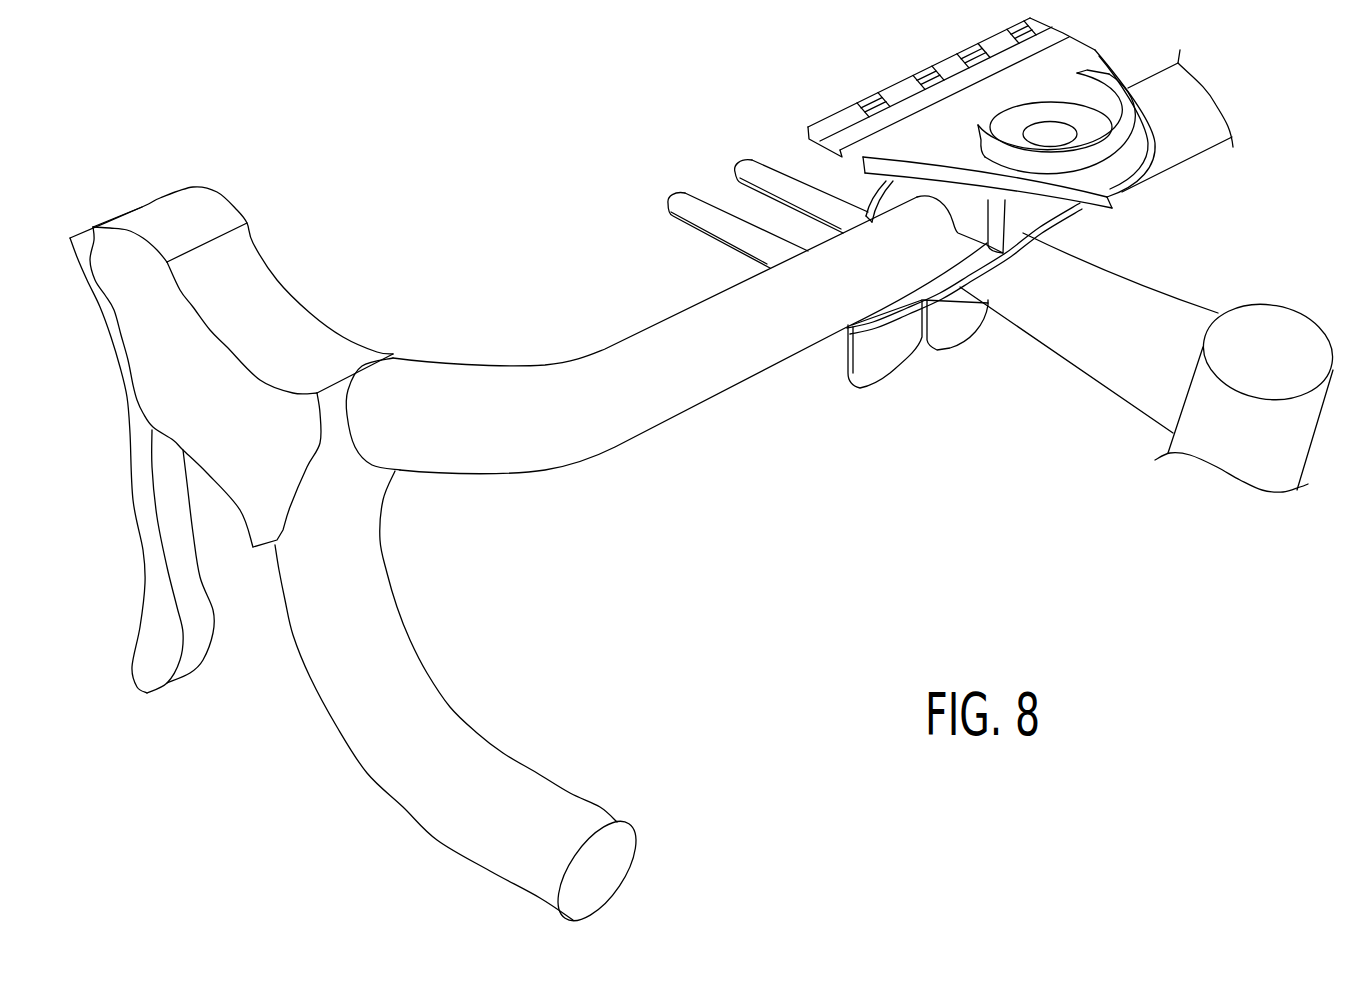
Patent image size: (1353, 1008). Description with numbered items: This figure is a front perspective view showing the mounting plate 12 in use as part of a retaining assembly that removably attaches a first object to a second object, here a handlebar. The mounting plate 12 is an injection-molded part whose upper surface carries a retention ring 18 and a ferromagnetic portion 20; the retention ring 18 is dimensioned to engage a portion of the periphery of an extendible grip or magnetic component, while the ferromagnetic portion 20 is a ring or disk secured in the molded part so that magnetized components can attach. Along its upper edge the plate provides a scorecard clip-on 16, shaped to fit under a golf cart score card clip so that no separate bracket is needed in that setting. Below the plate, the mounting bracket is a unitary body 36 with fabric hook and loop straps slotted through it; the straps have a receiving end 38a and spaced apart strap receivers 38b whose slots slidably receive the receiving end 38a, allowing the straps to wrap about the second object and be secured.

The mounting plate 12 is at (1064, 56).
The scorecard clip-on 16 is at (893, 96).
The retention ring 18 is at (1108, 150).
The ferromagnetic portion 20 is at (1017, 122).
The body 36 is at (1017, 215).
The receiving end 38a is at (686, 200).
The strap receivers 38b is at (950, 330).